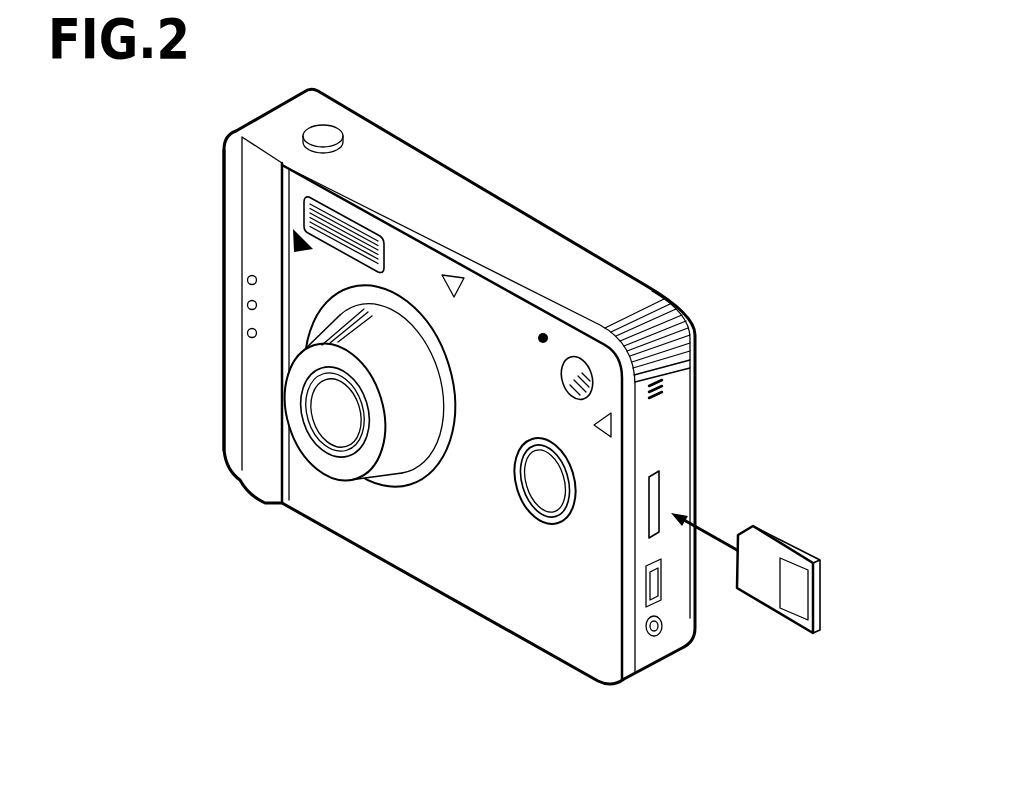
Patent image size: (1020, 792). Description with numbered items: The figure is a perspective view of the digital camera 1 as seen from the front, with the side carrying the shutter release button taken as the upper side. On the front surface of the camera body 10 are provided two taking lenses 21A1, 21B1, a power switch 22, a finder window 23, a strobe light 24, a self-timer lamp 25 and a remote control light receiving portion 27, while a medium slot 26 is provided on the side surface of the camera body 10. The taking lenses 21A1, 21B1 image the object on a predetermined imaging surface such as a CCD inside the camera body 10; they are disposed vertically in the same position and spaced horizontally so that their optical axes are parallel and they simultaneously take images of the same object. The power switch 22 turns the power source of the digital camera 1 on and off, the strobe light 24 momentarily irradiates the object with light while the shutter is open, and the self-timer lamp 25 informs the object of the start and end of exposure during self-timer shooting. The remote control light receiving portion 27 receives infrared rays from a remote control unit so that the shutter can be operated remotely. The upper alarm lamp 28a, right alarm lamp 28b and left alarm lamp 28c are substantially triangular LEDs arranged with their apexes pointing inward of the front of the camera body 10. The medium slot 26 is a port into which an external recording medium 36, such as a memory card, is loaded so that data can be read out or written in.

The digital camera 1 is at (429, 104).
The camera body 10 is at (450, 180).
The taking lens 21A1 is at (333, 413).
The taking lens 21B1 is at (531, 507).
The power switch 22 is at (250, 423).
The finder window 23 is at (594, 392).
The strobe light 24 is at (312, 205).
The self-timer lamp 25 is at (253, 296).
The medium slot 26 is at (656, 488).
The remote control light receiving portion 27 is at (545, 333).
The upper alarm lamp 28a is at (456, 280).
The right alarm lamp 28b is at (296, 240).
The left alarm lamp 28c is at (612, 430).
The external recording medium 36 is at (816, 601).